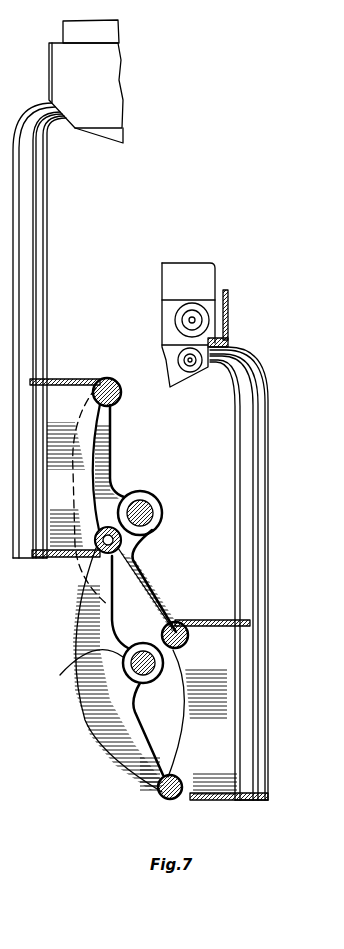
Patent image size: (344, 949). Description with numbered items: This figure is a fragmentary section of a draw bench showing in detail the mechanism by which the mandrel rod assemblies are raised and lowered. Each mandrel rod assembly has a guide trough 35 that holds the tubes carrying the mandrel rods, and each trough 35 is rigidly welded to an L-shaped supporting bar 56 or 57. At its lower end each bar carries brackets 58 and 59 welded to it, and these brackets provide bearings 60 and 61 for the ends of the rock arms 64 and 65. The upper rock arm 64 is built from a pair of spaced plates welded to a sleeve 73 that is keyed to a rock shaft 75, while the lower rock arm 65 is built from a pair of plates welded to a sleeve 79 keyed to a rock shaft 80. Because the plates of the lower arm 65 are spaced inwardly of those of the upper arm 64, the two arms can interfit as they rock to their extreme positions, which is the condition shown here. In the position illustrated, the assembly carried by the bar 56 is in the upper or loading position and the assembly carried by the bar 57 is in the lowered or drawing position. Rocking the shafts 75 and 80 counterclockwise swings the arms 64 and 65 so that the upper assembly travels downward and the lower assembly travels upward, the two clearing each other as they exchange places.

The guide trough 35 is at (228, 327).
The L-shaped supporting bar 56 is at (27, 203).
The L-shaped supporting bar 57 is at (250, 432).
The bracket 58 is at (58, 378).
The bracket 59 is at (58, 556).
The bearing 60 is at (106, 378).
The bearing 61 is at (122, 540).
The upper rock arm 64 is at (104, 436).
The lower rock arm 65 is at (90, 713).
The sleeve 73 is at (162, 512).
The rock shaft 75 is at (150, 504).
The sleeve 79 is at (123, 673).
The rock shaft 80 is at (78, 668).